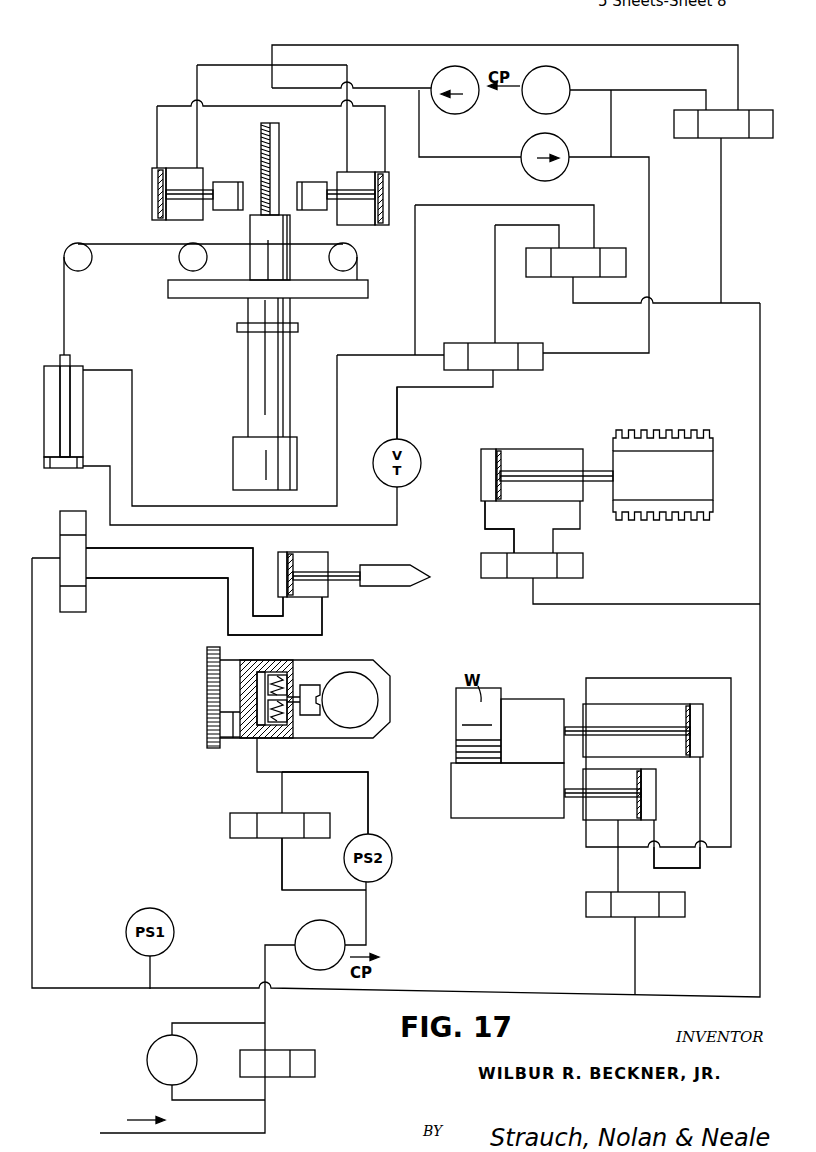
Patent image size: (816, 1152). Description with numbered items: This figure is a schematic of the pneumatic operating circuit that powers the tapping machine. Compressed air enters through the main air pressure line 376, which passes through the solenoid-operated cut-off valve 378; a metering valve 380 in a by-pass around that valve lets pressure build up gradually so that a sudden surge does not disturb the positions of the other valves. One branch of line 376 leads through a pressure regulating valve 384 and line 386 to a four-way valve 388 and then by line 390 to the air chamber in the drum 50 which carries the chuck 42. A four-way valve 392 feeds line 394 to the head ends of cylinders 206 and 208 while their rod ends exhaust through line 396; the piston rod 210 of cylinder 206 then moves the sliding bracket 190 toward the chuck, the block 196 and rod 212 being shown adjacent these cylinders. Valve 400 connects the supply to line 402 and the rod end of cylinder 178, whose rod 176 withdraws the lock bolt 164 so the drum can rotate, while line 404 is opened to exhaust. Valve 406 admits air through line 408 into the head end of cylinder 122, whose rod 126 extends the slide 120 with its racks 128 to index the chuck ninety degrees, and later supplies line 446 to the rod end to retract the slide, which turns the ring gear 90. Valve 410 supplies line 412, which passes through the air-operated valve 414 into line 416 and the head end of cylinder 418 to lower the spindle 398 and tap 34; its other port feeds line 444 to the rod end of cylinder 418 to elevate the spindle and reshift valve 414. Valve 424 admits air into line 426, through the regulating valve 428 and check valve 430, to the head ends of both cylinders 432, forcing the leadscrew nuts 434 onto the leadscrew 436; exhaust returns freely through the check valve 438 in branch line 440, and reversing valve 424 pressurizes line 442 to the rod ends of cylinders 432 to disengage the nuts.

The line 442 is at (437, 46).
The check valve 430 is at (436, 84).
The regulating valve 428 is at (569, 85).
The line 426 is at (647, 90).
The valve 424 is at (733, 138).
The branch line 440 is at (442, 147).
The check valve 438 is at (562, 165).
The leadscrew 436 is at (267, 150).
The leadscrew nuts 434 is at (311, 183).
The cylinders 432 is at (389, 192).
The cylinder 418 is at (46, 368).
The spindle 398 is at (258, 372).
The tap 34 is at (242, 468).
The line 444 is at (350, 355).
The line 412 is at (495, 300).
The valve 410 is at (556, 281).
The air operated valve 414 is at (502, 370).
The line 416 is at (405, 390).
The cylinder 122 is at (481, 472).
The piston rod 126 is at (546, 472).
The racks 128 is at (651, 523).
The slide 120 is at (698, 470).
The line 408 is at (485, 528).
The line 446 is at (578, 524).
The valve 406 is at (520, 580).
The valve 400 is at (60, 546).
The line 404 is at (200, 550).
The line 402 is at (196, 580).
The cylinder 178 is at (312, 558).
The lock bolt 164 is at (388, 572).
The piston rod 176 is at (342, 584).
The main air pressure line 376 is at (348, 996).
The drum 50 is at (245, 664).
The chuck 42 is at (373, 672).
The ring gear 90 is at (212, 700).
The block 196 is at (519, 704).
The piston rod 212 is at (567, 725).
The line 396 is at (718, 686).
The cylinder 208 is at (666, 712).
The cylinder 206 is at (650, 805).
The sliding bracket 190 is at (494, 812).
The piston rod 210 is at (572, 800).
The four-way valve 388 is at (275, 812).
The line 390 is at (370, 796).
The line 386 is at (282, 880).
The pressure regulating valve 384 is at (300, 935).
The line 394 is at (699, 869).
The four-way valve 392 is at (618, 918).
The metering valve 380 is at (147, 1058).
The cut-off valve 378 is at (272, 1078).